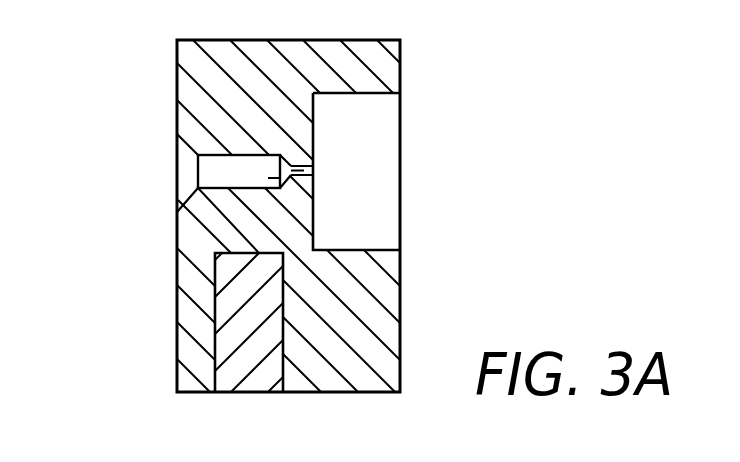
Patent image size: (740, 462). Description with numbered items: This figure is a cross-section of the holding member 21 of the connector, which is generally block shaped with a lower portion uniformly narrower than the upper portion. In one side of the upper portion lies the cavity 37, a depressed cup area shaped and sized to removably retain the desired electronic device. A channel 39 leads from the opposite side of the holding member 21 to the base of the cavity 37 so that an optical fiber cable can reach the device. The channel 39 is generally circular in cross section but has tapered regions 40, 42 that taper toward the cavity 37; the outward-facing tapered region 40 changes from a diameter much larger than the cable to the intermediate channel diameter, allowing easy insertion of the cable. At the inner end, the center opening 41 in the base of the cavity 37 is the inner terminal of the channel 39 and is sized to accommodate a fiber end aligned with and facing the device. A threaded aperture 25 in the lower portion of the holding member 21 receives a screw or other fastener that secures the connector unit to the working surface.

The holding member 21 is at (100, 43).
The threaded aperture 25 is at (255, 353).
The cavity 37 is at (387, 173).
The channel 39 is at (210, 167).
The tapered region 40 is at (188, 192).
The center opening 41 is at (307, 164).
The tapered region 42 is at (286, 180).